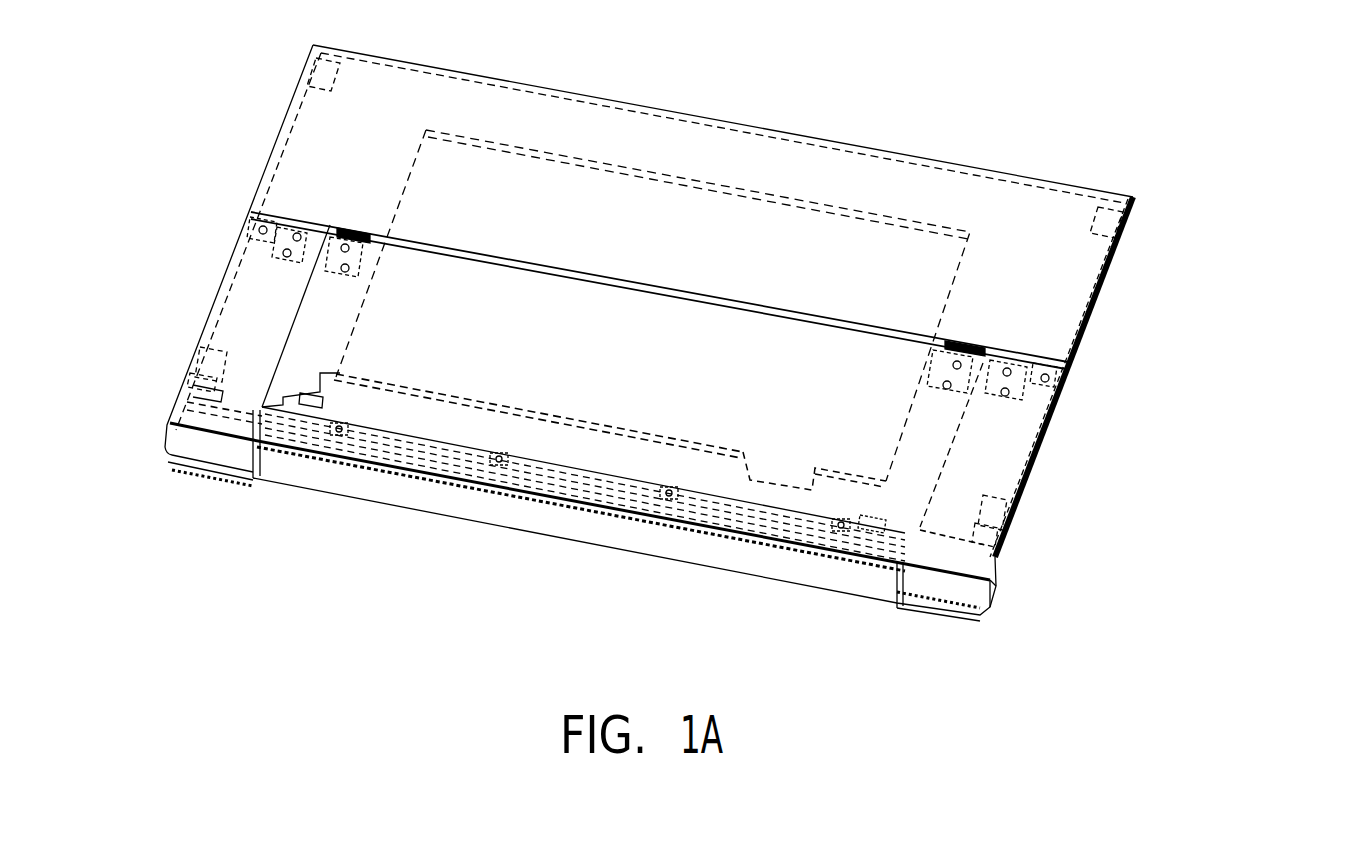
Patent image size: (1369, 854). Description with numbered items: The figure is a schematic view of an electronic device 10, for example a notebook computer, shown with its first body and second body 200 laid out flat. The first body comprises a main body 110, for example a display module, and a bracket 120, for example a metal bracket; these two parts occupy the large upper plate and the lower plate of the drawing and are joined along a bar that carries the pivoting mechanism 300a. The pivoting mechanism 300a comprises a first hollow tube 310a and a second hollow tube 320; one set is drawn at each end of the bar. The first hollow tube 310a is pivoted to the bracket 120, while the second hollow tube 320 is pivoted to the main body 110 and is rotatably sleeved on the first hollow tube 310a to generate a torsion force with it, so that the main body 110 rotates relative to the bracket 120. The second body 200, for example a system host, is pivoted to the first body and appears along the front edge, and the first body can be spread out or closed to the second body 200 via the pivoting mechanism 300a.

The electronic device 10 is at (701, 367).
The main body 110 is at (967, 198).
The bracket 120 is at (1007, 443).
The second body 200 is at (525, 517).
The pivoting mechanism 300a is at (701, 282).
The first hollow tube 310a is at (278, 215).
The second hollow tube 320 is at (352, 229).